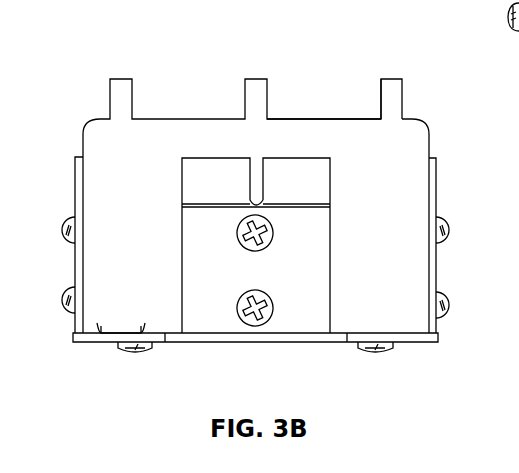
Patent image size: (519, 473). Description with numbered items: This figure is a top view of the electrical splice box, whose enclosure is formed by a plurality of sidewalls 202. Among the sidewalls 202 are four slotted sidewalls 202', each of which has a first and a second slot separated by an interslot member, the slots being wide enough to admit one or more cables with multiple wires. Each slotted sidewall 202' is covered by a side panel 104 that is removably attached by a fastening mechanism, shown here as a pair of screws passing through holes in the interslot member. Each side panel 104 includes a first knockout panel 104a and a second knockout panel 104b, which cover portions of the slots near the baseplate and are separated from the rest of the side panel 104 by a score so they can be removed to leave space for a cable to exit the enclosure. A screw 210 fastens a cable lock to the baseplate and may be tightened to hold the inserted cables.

The sidewall 202 is at (259, 206).
The slotted sidewall 202' is at (324, 78).
The screw 210 is at (390, 78).
The first knockout panel 104a is at (217, 180).
The second knockout panel 104b is at (292, 180).
The side panel 104 is at (213, 315).